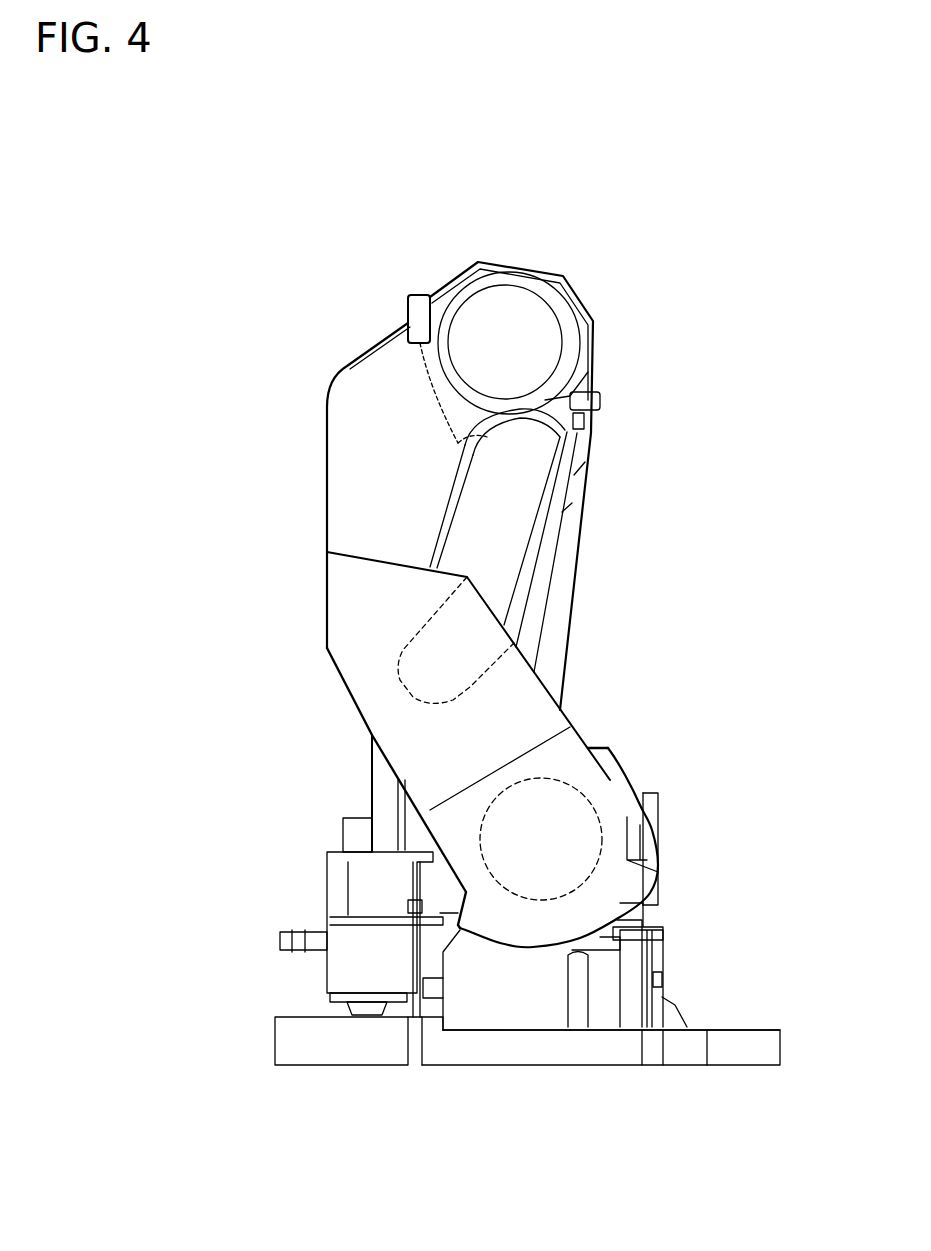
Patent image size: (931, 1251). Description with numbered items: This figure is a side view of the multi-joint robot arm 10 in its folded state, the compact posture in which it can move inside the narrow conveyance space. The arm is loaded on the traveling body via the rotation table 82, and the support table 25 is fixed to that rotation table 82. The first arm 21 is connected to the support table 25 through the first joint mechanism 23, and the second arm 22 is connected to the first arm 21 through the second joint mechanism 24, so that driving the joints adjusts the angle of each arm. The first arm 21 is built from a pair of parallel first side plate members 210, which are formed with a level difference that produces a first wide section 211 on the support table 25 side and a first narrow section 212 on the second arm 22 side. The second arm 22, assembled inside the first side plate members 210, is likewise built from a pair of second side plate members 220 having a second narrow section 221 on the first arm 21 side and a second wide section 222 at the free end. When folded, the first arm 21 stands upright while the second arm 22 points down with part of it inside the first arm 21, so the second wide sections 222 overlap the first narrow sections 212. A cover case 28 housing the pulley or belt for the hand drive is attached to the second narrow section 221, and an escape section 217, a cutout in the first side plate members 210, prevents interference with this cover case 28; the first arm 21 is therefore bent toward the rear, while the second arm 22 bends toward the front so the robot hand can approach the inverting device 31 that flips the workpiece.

The multi-joint robot arm 10 is at (540, 178).
The first arm 21 is at (327, 440).
The second arm 22 is at (523, 613).
The first joint mechanism 23 is at (588, 800).
The second joint mechanism 24 is at (550, 307).
The support table 25 is at (515, 980).
The cover case 28 is at (533, 457).
The inverting device 31 is at (370, 783).
The rotation table 82 is at (348, 1045).
The first side plate members 210 is at (217, 485).
The first wide section 211 is at (375, 598).
The first narrow section 212 is at (365, 505).
The escape section 217 is at (457, 443).
The second side plate members 220 is at (665, 495).
The second narrow section 221 is at (565, 495).
The second wide section 222 is at (540, 553).